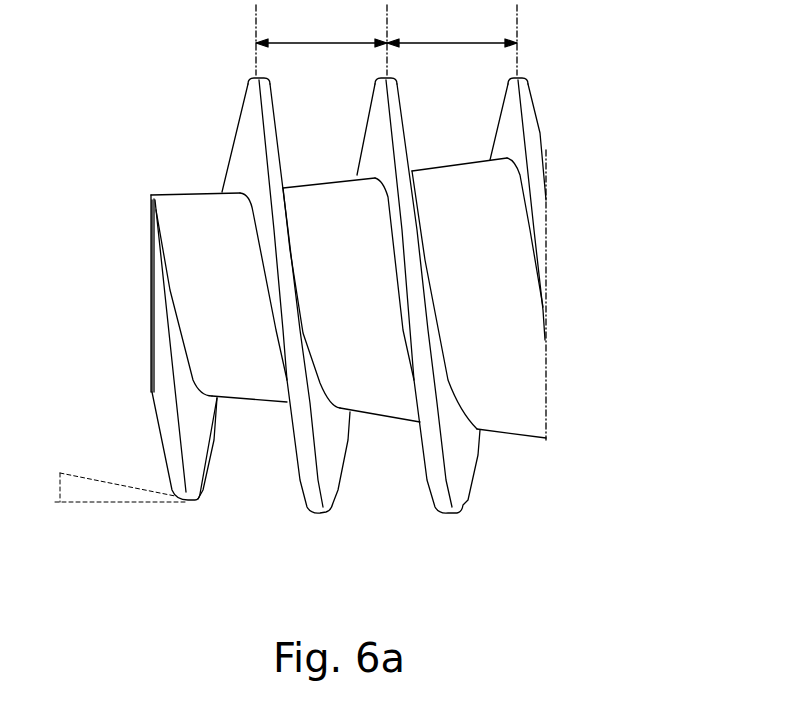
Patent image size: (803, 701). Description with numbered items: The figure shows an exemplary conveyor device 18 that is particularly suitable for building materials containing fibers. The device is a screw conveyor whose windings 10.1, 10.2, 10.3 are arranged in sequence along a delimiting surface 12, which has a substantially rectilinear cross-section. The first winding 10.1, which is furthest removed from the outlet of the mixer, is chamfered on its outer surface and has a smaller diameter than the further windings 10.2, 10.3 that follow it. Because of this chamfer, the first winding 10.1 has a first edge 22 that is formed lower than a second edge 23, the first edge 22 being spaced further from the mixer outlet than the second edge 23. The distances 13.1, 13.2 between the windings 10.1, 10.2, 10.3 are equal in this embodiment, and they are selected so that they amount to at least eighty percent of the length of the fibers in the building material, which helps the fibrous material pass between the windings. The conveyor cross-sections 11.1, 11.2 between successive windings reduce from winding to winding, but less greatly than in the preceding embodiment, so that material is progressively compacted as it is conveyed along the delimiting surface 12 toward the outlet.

The first winding 10.1 is at (180, 500).
The second winding 10.2 is at (312, 512).
The third winding 10.3 is at (448, 512).
The first conveyor cross-section 11.1 is at (282, 464).
The second conveyor cross-section 11.2 is at (412, 464).
The delimiting surface 12 is at (473, 158).
The first distance between windings 13.1 is at (321, 40).
The second distance between windings 13.2 is at (466, 222).
The conveyor device 18 is at (580, 94).
The first edge 22 is at (163, 452).
The second edge 23 is at (178, 430).